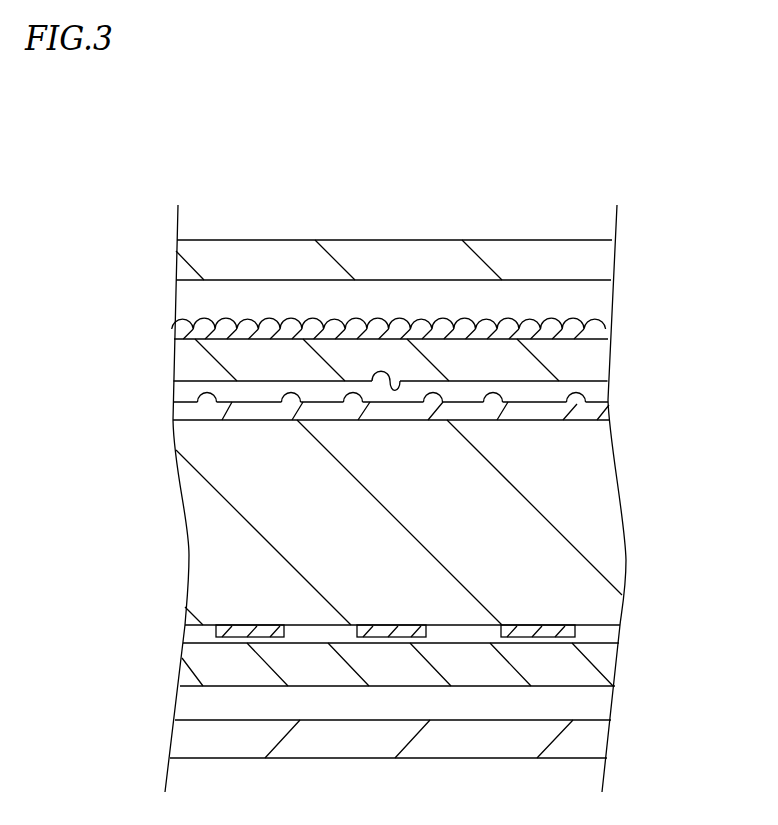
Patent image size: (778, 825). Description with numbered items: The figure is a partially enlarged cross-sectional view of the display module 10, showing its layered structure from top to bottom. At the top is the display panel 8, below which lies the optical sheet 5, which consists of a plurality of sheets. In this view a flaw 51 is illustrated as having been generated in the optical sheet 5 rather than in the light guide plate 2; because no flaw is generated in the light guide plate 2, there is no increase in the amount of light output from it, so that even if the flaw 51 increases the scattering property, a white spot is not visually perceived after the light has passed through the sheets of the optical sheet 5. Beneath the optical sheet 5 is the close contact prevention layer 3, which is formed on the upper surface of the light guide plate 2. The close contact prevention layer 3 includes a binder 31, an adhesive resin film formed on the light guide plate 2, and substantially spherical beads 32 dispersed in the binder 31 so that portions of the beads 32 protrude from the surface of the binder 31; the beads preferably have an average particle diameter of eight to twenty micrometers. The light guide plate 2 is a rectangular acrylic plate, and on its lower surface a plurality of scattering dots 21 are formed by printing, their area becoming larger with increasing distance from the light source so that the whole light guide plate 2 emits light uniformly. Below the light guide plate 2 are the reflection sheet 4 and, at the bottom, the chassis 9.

The display module 10 is at (695, 128).
The display panel 8 is at (603, 263).
The optical sheet 5 is at (603, 351).
The flaw 51 is at (400, 381).
The beads 32 is at (583, 392).
The binder 31 is at (600, 413).
The close contact prevention layer 3 is at (442, 412).
The light guide plate 2 is at (603, 490).
The scattering dots 21 is at (575, 632).
The reflection sheet 4 is at (610, 663).
The chassis 9 is at (600, 740).